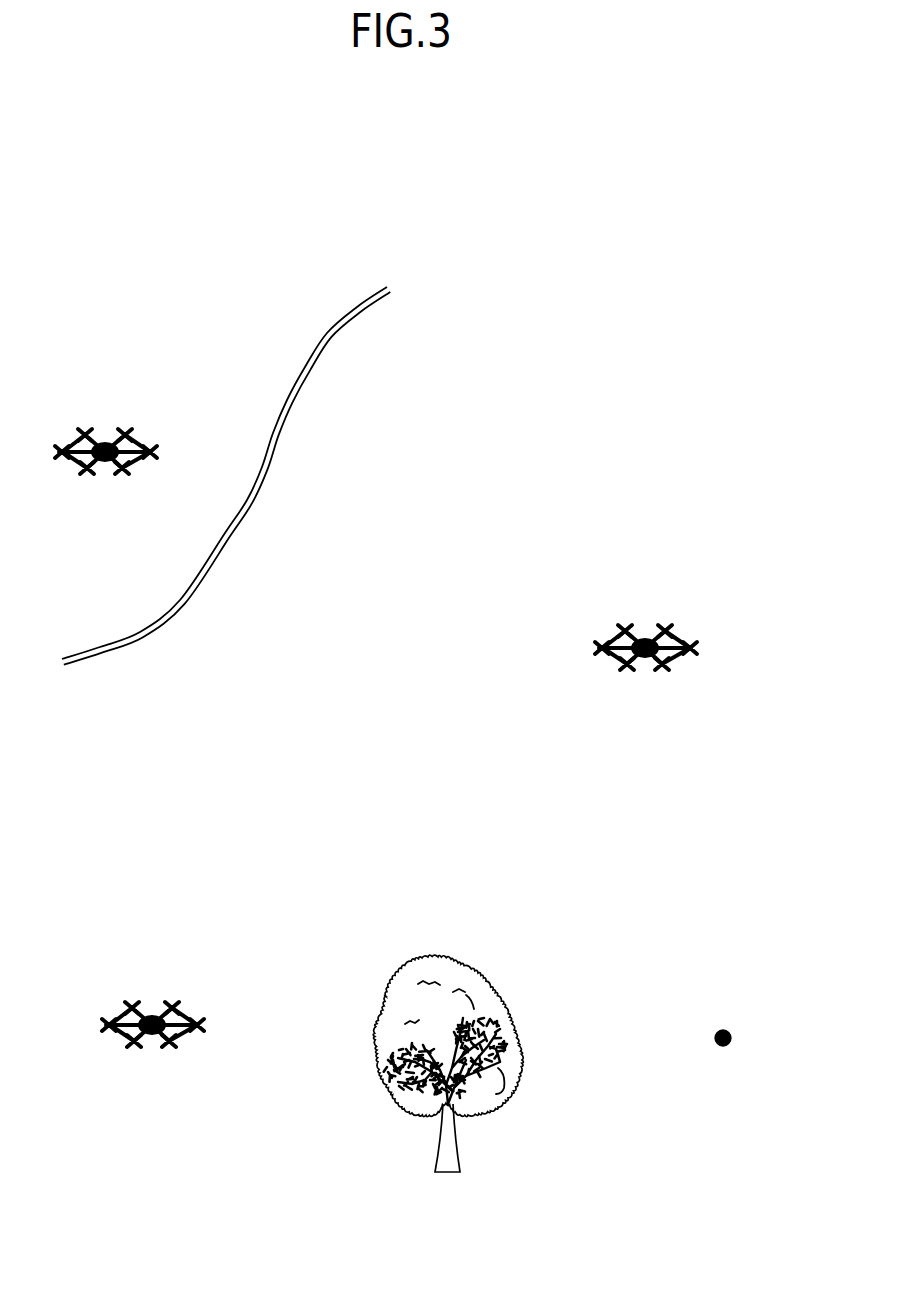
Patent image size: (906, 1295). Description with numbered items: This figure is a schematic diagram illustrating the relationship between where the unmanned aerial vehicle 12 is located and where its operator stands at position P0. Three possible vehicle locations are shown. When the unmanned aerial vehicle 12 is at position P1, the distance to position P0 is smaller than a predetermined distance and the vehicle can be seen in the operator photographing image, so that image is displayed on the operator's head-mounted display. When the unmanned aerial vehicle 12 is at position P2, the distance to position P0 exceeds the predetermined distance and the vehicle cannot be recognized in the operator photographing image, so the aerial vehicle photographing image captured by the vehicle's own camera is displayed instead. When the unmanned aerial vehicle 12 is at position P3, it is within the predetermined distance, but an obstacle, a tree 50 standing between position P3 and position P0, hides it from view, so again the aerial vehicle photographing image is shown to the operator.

The unmanned aerial vehicle 12 is at (106, 462).
The tree 50 is at (474, 972).
The position of the operator P0 is at (728, 1033).
The position P1 is at (644, 644).
The position P2 is at (104, 448).
The position P3 is at (151, 1021).